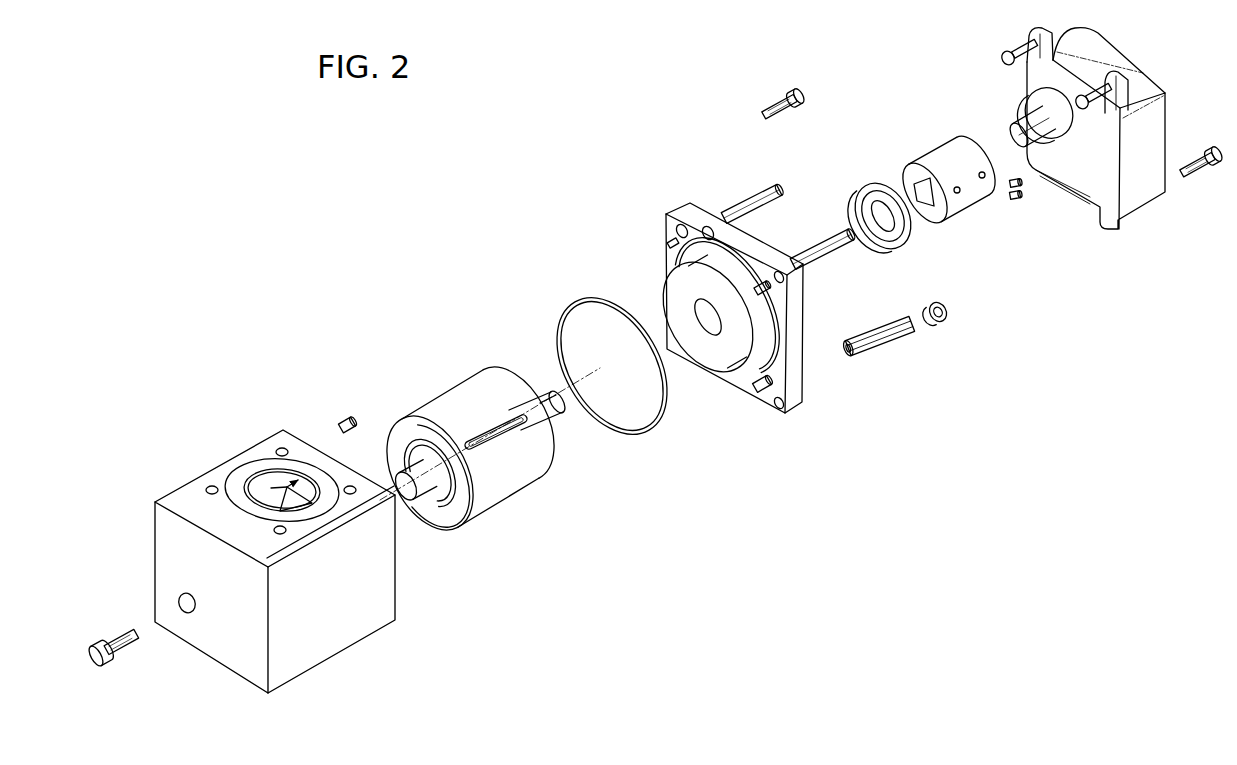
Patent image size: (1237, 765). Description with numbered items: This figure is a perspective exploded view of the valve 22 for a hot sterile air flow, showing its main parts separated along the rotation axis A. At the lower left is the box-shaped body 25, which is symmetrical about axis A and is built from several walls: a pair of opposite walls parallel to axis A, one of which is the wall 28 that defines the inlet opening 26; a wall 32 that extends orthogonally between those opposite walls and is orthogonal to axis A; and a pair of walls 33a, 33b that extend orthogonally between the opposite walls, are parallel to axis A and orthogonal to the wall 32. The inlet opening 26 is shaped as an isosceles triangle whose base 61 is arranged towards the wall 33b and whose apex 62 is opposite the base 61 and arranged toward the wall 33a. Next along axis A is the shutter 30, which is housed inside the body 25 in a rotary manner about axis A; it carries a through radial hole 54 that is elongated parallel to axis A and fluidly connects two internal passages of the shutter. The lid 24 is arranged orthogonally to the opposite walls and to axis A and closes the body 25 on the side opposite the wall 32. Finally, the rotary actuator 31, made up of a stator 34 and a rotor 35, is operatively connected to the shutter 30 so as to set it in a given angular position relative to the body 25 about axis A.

The valve 22 is at (453, 265).
The lid 24 is at (797, 342).
The body 25 is at (315, 406).
The inlet opening 26 is at (276, 474).
The wall 28 is at (197, 491).
The shutter 30 is at (512, 480).
The rotary actuator 31 is at (1162, 125).
The wall 32 is at (203, 637).
The wall 33a is at (165, 484).
The wall 33b is at (320, 633).
The stator 34 is at (1137, 192).
The rotor 35 is at (1027, 112).
The through radial hole 54 is at (487, 437).
The base 61 is at (310, 498).
The apex 62 is at (262, 495).
The axis A is at (590, 386).